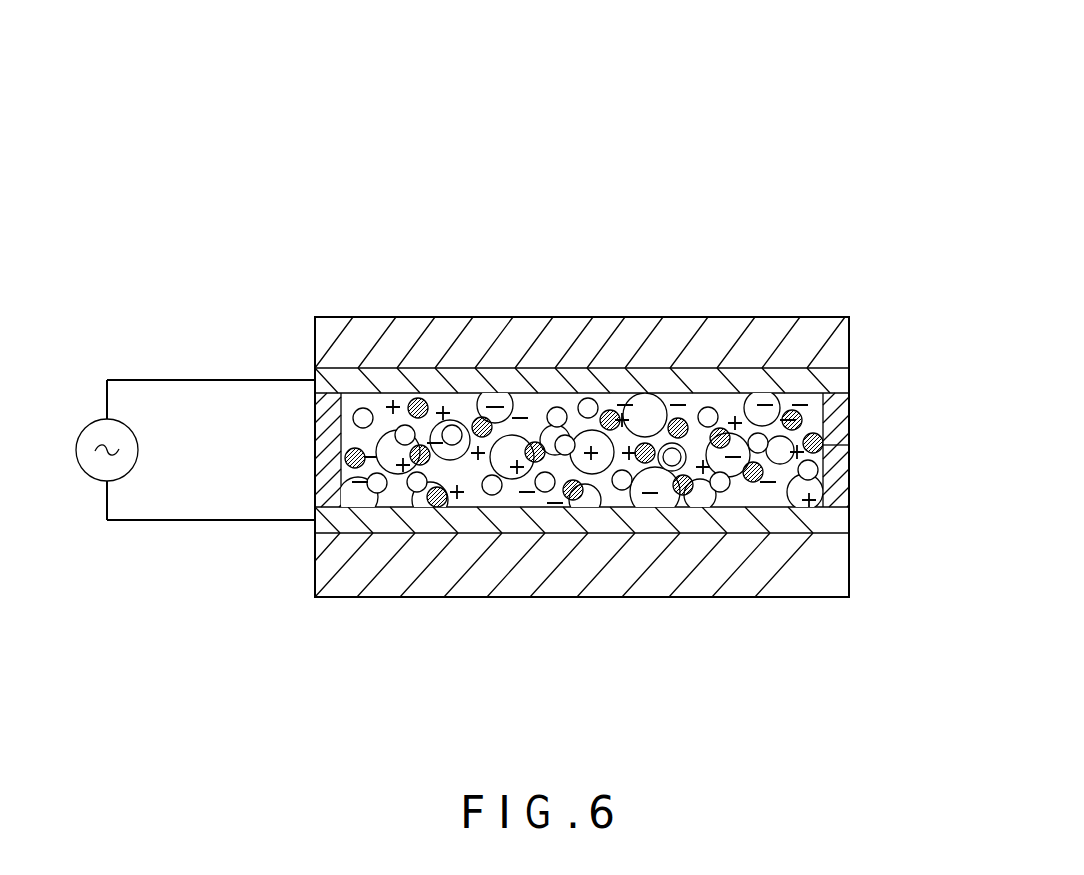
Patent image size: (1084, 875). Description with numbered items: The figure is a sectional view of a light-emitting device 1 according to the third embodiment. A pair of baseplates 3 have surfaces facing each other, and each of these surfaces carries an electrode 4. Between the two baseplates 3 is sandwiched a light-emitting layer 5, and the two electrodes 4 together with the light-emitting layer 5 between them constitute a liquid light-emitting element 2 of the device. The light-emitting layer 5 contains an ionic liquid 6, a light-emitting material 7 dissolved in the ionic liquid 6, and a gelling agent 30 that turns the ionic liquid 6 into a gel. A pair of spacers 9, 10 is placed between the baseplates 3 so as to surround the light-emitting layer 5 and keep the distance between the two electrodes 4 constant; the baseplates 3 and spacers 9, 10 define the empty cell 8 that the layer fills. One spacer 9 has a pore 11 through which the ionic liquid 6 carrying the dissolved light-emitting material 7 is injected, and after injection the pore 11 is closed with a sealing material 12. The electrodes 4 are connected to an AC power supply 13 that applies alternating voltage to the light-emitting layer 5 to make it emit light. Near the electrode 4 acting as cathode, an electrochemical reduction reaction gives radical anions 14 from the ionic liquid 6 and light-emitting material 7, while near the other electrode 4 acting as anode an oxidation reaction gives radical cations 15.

The light-emitting device 1 is at (885, 183).
The liquid light-emitting element 2 is at (677, 174).
The baseplate 3 is at (849, 340).
The electrode 4 is at (849, 380).
The light-emitting layer 5 is at (668, 243).
The ionic liquid 6 is at (556, 412).
The light-emitting material 7 is at (708, 412).
The empty cell 8 is at (483, 503).
The spacer 9 is at (849, 480).
The spacer 10 is at (315, 455).
The pore 11 is at (849, 450).
The sealing material 12 is at (849, 433).
The AC power supply 13 is at (88, 476).
The radical anions 14 is at (812, 400).
The radical cations 15 is at (457, 400).
The gelling agent 30 is at (515, 386).